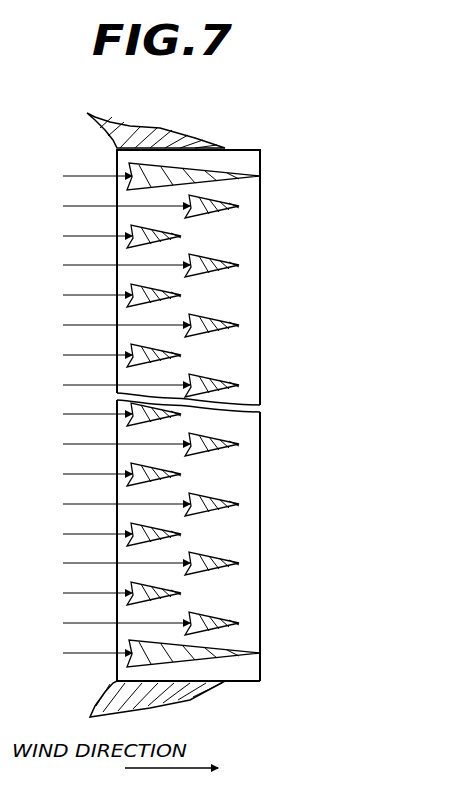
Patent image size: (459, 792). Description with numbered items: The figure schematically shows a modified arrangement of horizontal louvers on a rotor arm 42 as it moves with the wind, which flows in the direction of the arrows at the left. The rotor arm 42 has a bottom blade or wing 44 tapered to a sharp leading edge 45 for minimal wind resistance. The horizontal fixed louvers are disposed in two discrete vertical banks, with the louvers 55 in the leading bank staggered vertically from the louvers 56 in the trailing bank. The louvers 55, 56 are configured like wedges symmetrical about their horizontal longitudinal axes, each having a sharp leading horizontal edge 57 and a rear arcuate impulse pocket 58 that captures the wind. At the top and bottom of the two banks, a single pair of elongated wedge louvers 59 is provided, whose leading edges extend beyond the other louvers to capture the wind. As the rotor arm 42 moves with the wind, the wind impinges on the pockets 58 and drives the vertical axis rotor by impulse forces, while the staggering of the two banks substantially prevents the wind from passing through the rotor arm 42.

The rotor arm 42 is at (264, 237).
The bottom blade or wing 44 is at (148, 706).
The sharp leading edge 45 is at (222, 683).
The louvers in the leading bank 55 is at (212, 199).
The louvers in the trailing bank 56 is at (145, 470).
The sharp leading horizontal edges 57 is at (238, 265).
The rear arcuate impulse pockets 58 is at (130, 172).
The elongated wedge louvers 59 is at (193, 176).